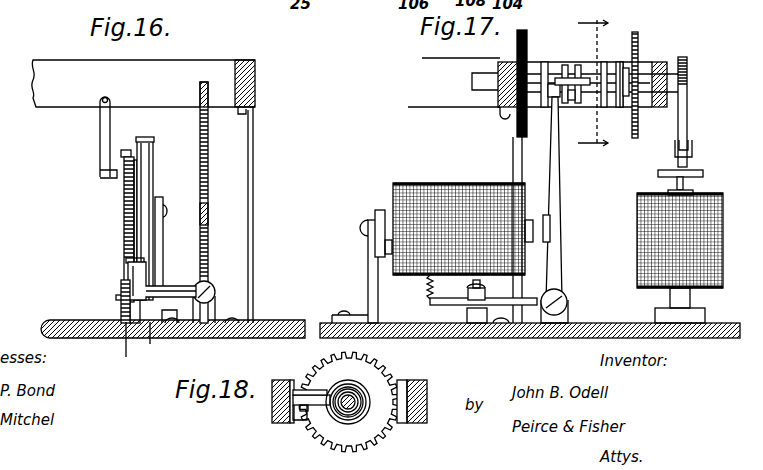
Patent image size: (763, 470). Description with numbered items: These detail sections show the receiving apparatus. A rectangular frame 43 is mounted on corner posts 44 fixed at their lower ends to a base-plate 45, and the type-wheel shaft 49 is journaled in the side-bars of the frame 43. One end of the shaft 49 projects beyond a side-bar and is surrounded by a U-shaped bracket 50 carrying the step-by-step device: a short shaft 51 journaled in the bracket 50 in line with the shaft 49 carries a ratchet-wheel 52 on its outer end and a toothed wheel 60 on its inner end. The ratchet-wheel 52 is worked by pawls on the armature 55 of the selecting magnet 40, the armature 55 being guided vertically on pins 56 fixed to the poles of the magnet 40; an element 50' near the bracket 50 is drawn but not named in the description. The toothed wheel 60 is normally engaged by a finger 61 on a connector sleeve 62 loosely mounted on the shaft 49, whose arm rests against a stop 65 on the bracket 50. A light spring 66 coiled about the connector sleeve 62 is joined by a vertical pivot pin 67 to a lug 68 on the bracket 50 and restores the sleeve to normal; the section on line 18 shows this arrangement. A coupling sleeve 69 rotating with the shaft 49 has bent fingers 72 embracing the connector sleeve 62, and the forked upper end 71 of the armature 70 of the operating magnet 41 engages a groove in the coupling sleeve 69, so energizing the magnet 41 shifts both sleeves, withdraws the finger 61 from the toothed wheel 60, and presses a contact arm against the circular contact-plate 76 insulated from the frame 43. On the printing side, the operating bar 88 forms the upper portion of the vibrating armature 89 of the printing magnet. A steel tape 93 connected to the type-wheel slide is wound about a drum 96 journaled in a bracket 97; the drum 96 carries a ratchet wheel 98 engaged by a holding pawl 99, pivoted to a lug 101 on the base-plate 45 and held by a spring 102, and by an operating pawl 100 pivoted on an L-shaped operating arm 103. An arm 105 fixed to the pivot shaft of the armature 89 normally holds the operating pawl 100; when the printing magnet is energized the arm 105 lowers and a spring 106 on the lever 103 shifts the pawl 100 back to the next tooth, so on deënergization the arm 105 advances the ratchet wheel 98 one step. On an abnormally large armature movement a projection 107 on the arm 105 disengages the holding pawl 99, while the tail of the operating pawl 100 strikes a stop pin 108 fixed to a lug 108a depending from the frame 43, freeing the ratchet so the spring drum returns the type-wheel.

In FIG. 16, the rectangular frame 43 is at (256, 81).
In FIG. 17, the rectangular frame 43 is at (500, 110).
In FIG. 16, the corner posts 44 is at (255, 226).
In FIG. 17, the corner posts 44 is at (513, 162).
In FIG. 16, the base-plate 45 is at (281, 320).
In FIG. 17, the base-plate 45 is at (528, 340).
In FIG. 16, the operating bar 88 is at (200, 87).
In FIG. 16, the vibrating armature 89 is at (201, 220).
In FIG. 16, the steel tape 93 is at (185, 130).
In FIG. 16, the drum 96 is at (148, 170).
In FIG. 16, the bracket 97 is at (163, 242).
In FIG. 16, the ratchet wheel 98 is at (124, 203).
In FIG. 16, the holding pawl 99 is at (128, 270).
In FIG. 16, the operating pawl 100 is at (122, 156).
In FIG. 16, the lug 101 is at (158, 341).
In FIG. 16, the spring 102 is at (129, 348).
In FIG. 16, the L-shaped operating arm 103 is at (124, 220).
In FIG. 16, the arm 105 is at (215, 297).
In FIG. 16, the spring 106 is at (121, 311).
In FIG. 16, the projection 107 is at (127, 260).
In FIG. 16, the stop pin 108 is at (108, 179).
In FIG. 16, the lug 108a is at (100, 125).
In FIG. 17, the type-wheel shaft 49 is at (472, 83).
In FIG. 18, the type-wheel shaft 49 is at (352, 410).
In FIG. 17, the circular contact-plate 76 is at (527, 35).
In FIG. 17, the coupling sleeve 69 is at (546, 65).
In FIG. 17, the forked upper end 71 is at (552, 100).
In FIG. 17, the armature 70 is at (562, 205).
In FIG. 17, the connector sleeve 62 is at (589, 93).
In FIG. 18, the connector sleeve 62 is at (346, 410).
In FIG. 17, the stop 65 is at (575, 68).
In FIG. 17, the bent fingers 72 is at (567, 101).
In FIG. 17, the section line 18 is at (598, 81).
In FIG. 17, the light spring 66 is at (606, 107).
In FIG. 18, the light spring 66 is at (350, 380).
In FIG. 17, the finger 61 is at (625, 62).
In FIG. 18, the finger 61 is at (312, 392).
In FIG. 17, the toothed wheel 60 is at (640, 45).
In FIG. 18, the toothed wheel 60 is at (380, 366).
In FIG. 17, the U-shaped bracket 50 is at (695, 84).
In FIG. 18, the U-shaped bracket 50 is at (354, 402).
In FIG. 17, the short shaft 51 is at (687, 60).
In FIG. 17, the ratchet-wheel 52 is at (688, 64).
In FIG. 17, the fork 50' is at (705, 144).
In FIG. 17, the armature 55 is at (700, 172).
In FIG. 17, the pins 56 is at (693, 191).
In FIG. 17, the selecting magnet 40 is at (637, 238).
In FIG. 17, the operating magnet 41 is at (420, 183).
In FIG. 18, the vertical pivot pin 67 is at (305, 412).
In FIG. 18, the lug 68 is at (298, 414).